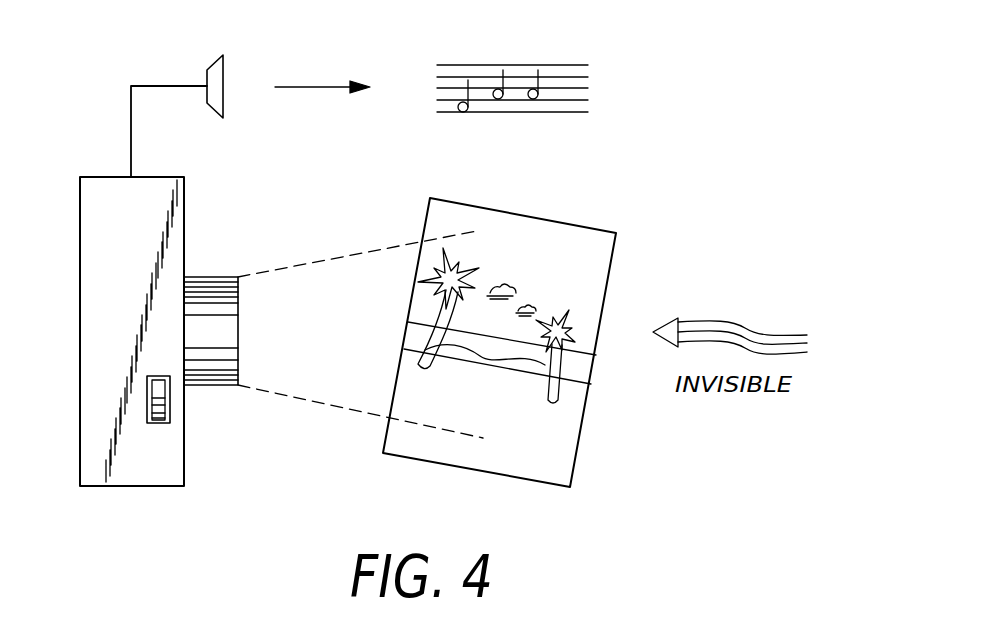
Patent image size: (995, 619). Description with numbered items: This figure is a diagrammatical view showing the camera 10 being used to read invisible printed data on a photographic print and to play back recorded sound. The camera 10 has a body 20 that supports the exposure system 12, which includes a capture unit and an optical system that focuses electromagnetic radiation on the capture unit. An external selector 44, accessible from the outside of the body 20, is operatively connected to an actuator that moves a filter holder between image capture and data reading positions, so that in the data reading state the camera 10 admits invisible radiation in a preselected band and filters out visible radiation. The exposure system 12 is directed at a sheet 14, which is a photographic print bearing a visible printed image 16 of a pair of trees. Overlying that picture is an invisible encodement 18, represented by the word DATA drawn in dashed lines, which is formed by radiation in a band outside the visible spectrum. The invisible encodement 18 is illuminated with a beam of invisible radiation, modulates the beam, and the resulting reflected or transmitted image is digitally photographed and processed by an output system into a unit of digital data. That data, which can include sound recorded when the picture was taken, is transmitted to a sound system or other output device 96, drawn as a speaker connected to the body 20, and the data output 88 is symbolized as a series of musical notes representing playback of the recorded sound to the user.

The camera 10 is at (162, 368).
The exposure system 12 is at (227, 385).
The sheet 14 is at (526, 357).
The visible printed image 16 is at (527, 288).
The invisible encodement 18 is at (512, 388).
The body 20 is at (184, 486).
The external selector 44 is at (166, 406).
The data output 88 is at (553, 65).
The output device 96 is at (206, 69).